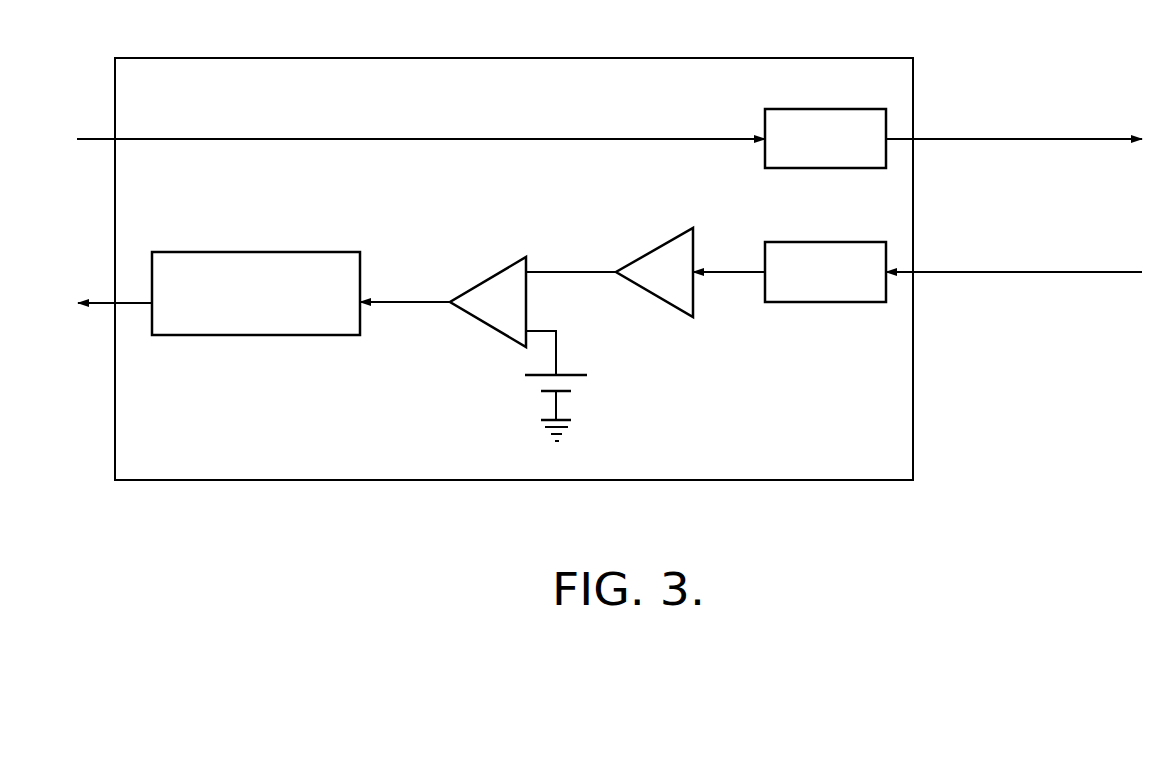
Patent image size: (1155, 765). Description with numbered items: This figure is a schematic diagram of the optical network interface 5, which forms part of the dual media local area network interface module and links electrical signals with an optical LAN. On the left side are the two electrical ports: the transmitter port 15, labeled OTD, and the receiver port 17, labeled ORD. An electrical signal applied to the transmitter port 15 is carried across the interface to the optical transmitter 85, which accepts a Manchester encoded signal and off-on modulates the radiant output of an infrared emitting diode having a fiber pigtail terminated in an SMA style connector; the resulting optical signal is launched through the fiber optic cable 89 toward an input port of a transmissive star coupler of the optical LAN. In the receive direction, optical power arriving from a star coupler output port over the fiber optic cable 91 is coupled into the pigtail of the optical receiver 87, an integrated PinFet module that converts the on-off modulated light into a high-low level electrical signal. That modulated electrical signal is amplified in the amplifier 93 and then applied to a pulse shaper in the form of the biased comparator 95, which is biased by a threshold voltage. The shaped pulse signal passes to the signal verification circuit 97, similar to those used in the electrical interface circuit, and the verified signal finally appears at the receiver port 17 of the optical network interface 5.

The optical network interface 5 is at (338, 58).
The transmitter port 15 is at (115, 139).
The receiver port 17 is at (115, 303).
The optical transmitter 85 is at (810, 109).
The optical receiver 87 is at (798, 242).
The fiber optic cable 89 is at (940, 140).
The fiber optic cable 91 is at (935, 273).
The amplifier 93 is at (693, 260).
The biased comparator 95 is at (479, 282).
The signal verification circuit 97 is at (300, 252).